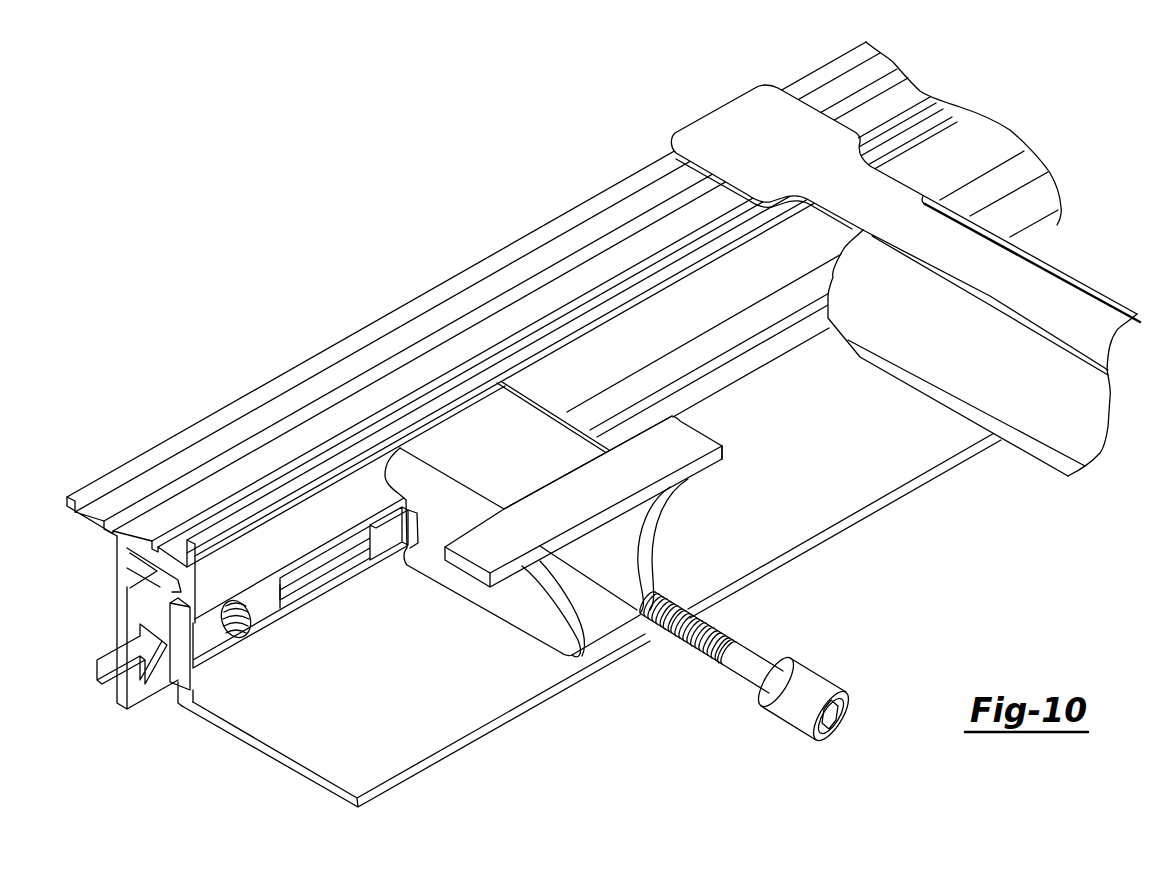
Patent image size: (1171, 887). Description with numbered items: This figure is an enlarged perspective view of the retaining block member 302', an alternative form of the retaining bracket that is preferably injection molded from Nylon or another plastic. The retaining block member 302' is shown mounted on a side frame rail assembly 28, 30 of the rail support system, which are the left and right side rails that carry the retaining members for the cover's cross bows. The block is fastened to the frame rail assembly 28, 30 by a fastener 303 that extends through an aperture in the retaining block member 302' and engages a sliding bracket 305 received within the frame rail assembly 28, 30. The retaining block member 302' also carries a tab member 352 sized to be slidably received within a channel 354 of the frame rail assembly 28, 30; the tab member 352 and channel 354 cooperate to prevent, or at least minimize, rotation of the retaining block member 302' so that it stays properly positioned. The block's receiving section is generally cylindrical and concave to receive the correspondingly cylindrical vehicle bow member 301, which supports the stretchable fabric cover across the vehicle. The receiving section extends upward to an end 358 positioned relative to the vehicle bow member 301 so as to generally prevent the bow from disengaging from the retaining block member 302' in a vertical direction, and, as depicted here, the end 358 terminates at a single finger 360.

The left side frame rail assembly 28 is at (251, 393).
The right side frame rail assembly 30 is at (252, 394).
The vehicle bow member 301 is at (950, 410).
The retaining block member 302' is at (587, 536).
The fastener 303 is at (780, 662).
The sliding bracket 305 is at (202, 643).
The tab member 352 is at (371, 540).
The channel 354 is at (300, 598).
The end 358 is at (705, 434).
The single finger 360 is at (724, 449).